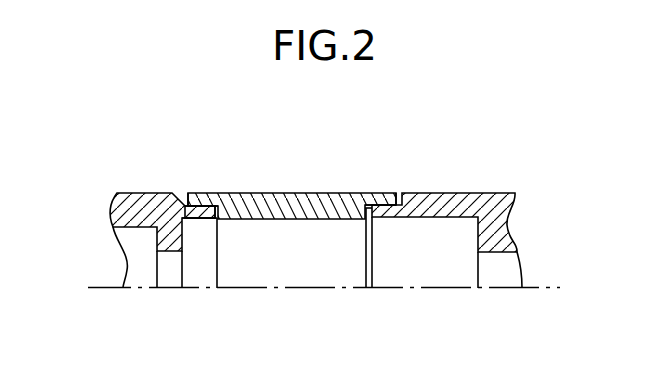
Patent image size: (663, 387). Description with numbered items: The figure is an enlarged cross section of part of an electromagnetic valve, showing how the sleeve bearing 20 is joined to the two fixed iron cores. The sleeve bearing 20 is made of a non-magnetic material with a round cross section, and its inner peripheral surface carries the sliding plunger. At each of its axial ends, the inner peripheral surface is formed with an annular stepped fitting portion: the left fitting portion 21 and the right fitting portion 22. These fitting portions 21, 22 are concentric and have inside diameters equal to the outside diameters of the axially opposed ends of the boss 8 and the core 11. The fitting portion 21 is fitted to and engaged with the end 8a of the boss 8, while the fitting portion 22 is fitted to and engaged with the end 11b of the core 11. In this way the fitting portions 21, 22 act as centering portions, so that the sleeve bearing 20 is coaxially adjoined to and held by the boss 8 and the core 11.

The boss 8 is at (136, 188).
The end of the boss 8a is at (202, 208).
The core (fixed iron core) 11 is at (458, 184).
The end of the core 11b is at (383, 212).
The sleeve bearing 20 is at (292, 183).
The fitting portion 21 is at (190, 193).
The fitting portion 22 is at (383, 193).